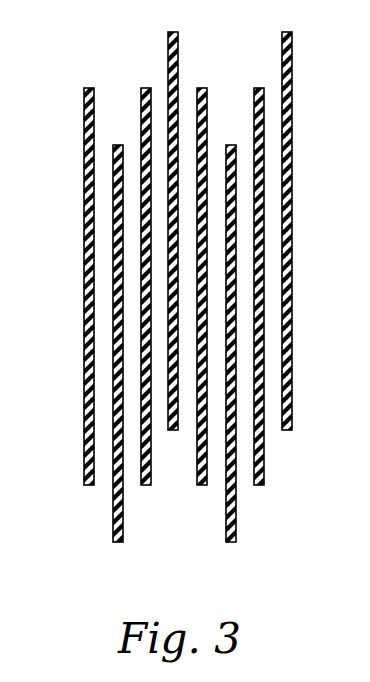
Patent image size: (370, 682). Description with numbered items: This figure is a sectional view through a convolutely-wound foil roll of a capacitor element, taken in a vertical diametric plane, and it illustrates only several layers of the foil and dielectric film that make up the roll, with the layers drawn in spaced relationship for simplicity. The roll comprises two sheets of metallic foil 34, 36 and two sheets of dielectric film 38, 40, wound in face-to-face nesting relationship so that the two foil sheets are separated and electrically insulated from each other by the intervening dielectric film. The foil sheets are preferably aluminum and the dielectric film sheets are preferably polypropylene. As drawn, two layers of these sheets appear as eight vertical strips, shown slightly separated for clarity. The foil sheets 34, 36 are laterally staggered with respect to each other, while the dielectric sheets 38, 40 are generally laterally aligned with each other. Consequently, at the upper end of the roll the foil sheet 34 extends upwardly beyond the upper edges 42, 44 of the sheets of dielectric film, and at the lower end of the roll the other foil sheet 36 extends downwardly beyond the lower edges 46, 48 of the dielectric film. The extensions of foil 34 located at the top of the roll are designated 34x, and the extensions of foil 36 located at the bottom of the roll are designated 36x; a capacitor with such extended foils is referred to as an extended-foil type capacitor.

The sheet of metallic foil 34 is at (192, 220).
The extensions of foil 34x is at (168, 62).
The sheet of metallic foil 36 is at (190, 352).
The extensions of foil 36x is at (113, 521).
The sheet of dielectric film 38 is at (190, 322).
The sheet of dielectric film 40 is at (132, 311).
The upper edge of dielectric film 42 is at (190, 298).
The upper edge of dielectric film 44 is at (132, 279).
The lower edge of dielectric film 46 is at (146, 487).
The lower edge of dielectric film 48 is at (86, 487).